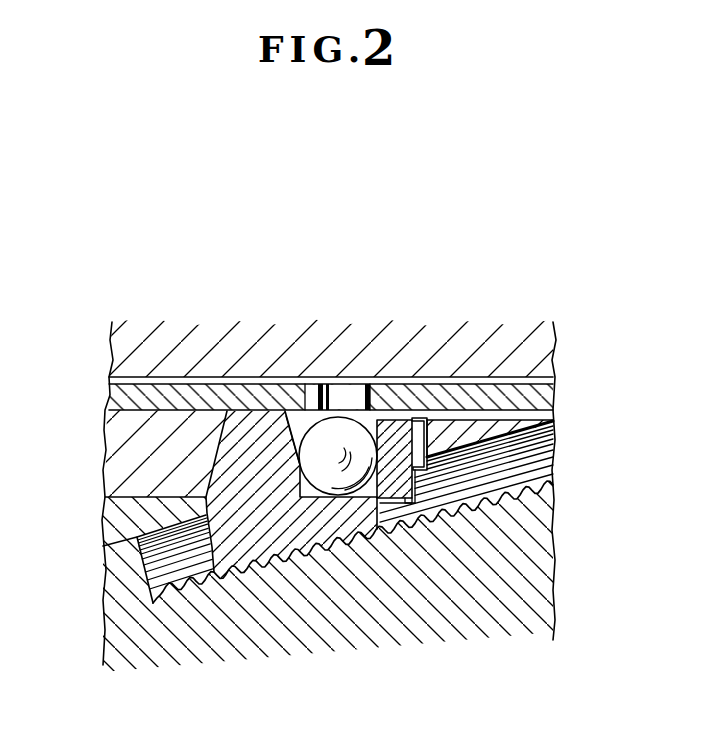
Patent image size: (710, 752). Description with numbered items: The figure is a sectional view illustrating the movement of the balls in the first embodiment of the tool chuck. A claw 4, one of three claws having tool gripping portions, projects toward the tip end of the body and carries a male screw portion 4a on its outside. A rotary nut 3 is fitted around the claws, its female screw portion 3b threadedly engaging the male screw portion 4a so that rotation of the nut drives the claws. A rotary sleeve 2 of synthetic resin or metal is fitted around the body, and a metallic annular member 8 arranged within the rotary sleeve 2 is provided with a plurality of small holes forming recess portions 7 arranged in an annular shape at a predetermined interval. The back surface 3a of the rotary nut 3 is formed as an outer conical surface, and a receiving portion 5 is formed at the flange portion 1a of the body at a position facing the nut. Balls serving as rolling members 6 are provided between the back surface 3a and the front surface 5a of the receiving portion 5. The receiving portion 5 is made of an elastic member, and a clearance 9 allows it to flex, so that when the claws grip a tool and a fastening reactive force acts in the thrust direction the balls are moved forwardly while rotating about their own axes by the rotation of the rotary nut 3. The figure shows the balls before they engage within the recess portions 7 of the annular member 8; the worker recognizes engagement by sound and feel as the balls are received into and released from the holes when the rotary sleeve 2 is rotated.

The flange portion 1a is at (478, 427).
The rotary sleeve 2 is at (135, 363).
The rotary nut 3 is at (262, 455).
The back surface 3a is at (300, 427).
The female screw portion 3b is at (217, 572).
The claw 4 is at (123, 617).
The male screw portion 4a is at (143, 570).
The receiving portion 5 is at (398, 438).
The front surface 5a is at (372, 427).
The rolling member 6 is at (338, 480).
The recess portion 7 is at (335, 391).
The annular member 8 is at (123, 402).
The clearance 9 is at (430, 424).